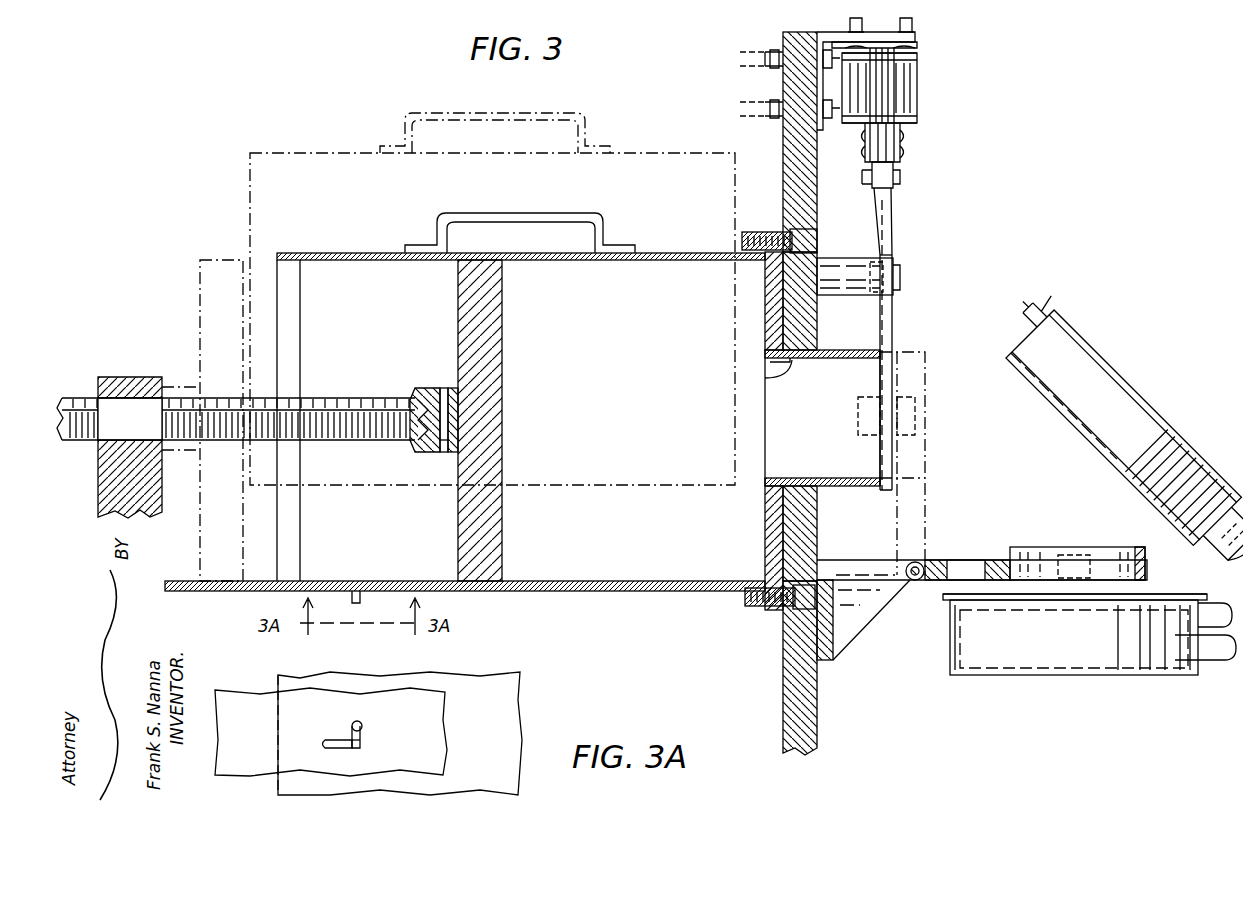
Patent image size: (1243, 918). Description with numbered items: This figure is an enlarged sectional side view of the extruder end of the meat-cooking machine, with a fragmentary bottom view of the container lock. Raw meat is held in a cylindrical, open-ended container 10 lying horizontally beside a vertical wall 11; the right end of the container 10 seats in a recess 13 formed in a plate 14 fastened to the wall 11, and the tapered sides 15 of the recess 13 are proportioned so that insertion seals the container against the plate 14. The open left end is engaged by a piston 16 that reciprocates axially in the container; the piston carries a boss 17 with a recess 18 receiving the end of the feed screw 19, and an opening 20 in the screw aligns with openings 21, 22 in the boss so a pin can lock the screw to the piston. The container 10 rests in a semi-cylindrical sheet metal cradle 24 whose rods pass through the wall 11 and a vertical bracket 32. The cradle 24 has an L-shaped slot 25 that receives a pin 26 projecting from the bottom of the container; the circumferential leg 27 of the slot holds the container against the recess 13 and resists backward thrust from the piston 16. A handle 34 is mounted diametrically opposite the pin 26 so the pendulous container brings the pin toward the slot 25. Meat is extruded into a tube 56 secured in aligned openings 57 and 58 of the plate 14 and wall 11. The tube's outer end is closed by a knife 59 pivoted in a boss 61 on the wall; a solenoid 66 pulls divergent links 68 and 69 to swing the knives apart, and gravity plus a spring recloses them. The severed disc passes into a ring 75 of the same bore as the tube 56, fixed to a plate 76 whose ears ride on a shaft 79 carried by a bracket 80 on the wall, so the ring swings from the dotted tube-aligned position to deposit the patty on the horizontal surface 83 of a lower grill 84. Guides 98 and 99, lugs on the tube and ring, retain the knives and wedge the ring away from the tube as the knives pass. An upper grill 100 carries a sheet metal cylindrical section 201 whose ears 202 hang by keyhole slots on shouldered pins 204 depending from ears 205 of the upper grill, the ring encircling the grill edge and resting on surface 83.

In FIG. 3, the container 10 is at (318, 153).
In FIG. 3A, the container 10 is at (505, 716).
In FIG. 3, the vertical wall 11 is at (783, 45).
In FIG. 3, the recess 13 is at (785, 290).
In FIG. 3, the plate 14 is at (776, 322).
In FIG. 3, the tapered sides 15 is at (758, 585).
In FIG. 3, the piston 16 is at (490, 327).
In FIG. 3, the boss 17 is at (420, 390).
In FIG. 3, the recess 18 is at (416, 420).
In FIG. 3, the feed screw 19 is at (327, 398).
In FIG. 3, the opening 20 is at (450, 420).
In FIG. 3, the opening 21 is at (443, 388).
In FIG. 3, the opening 22 is at (440, 450).
In FIG. 3, the cradle 24 is at (592, 592).
In FIG. 3A, the cradle 24 is at (400, 697).
In FIG. 3A, the L-shaped slot 25 is at (332, 742).
In FIG. 3, the pin 26 is at (355, 602).
In FIG. 3A, the pin 26 is at (368, 715).
In FIG. 3A, the circumferential leg 27 is at (362, 740).
In FIG. 3, the bracket 32 is at (130, 377).
In FIG. 3, the handle 34 is at (470, 113).
In FIG. 3, the tube 56 is at (822, 418).
In FIG. 3, the opening 57 is at (770, 365).
In FIG. 3, the opening 58 is at (790, 375).
In FIG. 3, the knife 59 is at (893, 332).
In FIG. 3, the boss 61 is at (846, 258).
In FIG. 3, the solenoid 66 is at (917, 82).
In FIG. 3, the link 68 is at (876, 210).
In FIG. 3, the link 69 is at (892, 225).
In FIG. 3, the ring 75 is at (925, 465).
In FIG. 3, the plate 76 is at (998, 558).
In FIG. 3, the shaft 79 is at (913, 582).
In FIG. 3, the bracket 80 is at (852, 560).
In FIG. 3, the horizontal surface 83 is at (1190, 596).
In FIG. 3, the lower grill 84 is at (1089, 634).
In FIG. 3, the guide 98 is at (860, 400).
In FIG. 3, the guide 99 is at (915, 403).
In FIG. 3, the upper grill 100 is at (1128, 372).
In FIG. 3, the cylindrical section 201 is at (1050, 388).
In FIG. 3, the ear 202 is at (1010, 328).
In FIG. 3, the shouldered pin 204 is at (1006, 337).
In FIG. 3, the ear 205 is at (1023, 322).